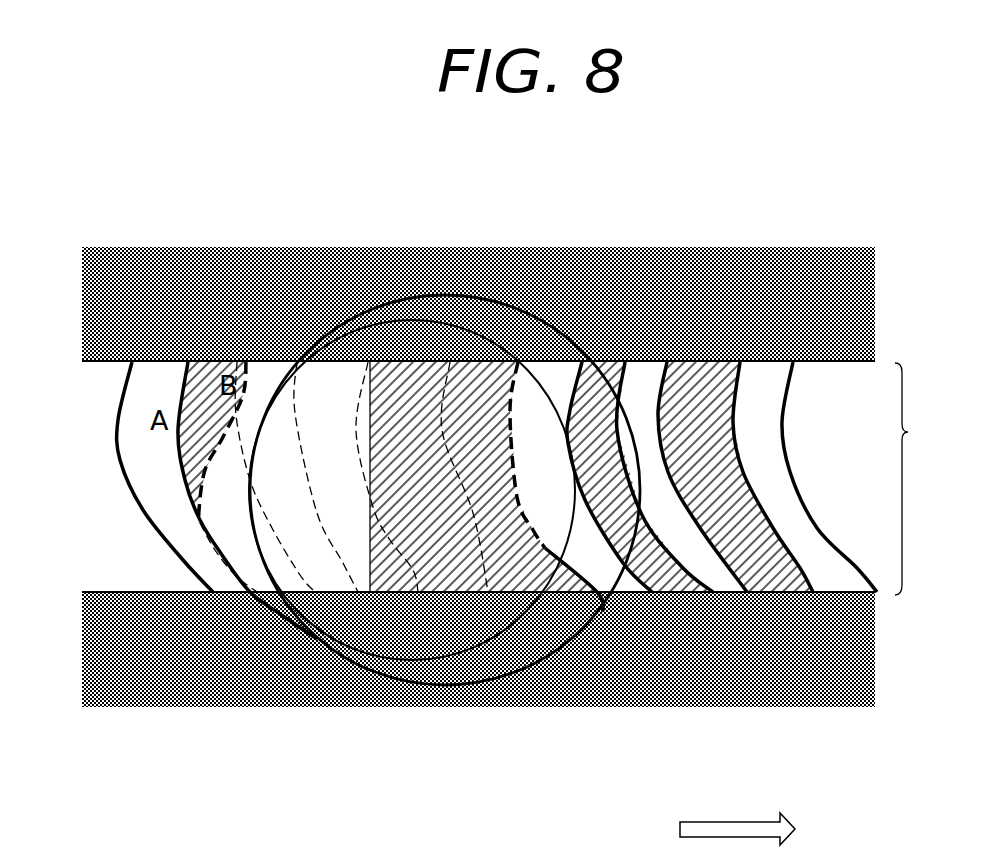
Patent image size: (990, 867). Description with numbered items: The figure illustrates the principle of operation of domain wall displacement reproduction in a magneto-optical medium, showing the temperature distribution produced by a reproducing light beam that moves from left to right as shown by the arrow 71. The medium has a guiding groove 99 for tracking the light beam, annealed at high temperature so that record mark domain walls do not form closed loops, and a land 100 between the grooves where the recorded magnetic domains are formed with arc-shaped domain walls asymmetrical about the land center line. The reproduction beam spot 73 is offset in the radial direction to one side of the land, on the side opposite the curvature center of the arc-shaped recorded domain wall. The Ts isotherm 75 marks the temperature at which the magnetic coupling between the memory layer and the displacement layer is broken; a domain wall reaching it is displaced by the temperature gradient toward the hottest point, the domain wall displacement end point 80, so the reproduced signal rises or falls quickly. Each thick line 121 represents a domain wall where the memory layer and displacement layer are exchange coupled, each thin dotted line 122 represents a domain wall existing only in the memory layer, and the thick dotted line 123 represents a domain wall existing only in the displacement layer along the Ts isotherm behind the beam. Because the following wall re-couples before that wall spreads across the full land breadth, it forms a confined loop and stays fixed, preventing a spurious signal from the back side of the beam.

The arrow 71 is at (767, 820).
The reproduction beam spot 73 is at (556, 652).
The Ts isotherm 75 is at (243, 597).
The domain wall displacement end point 80 is at (388, 368).
The guiding groove 99 is at (860, 305).
The land 100 is at (925, 479).
The thick line 121 is at (240, 361).
The thin dotted line 122 is at (255, 593).
The thick dotted line 123 is at (178, 457).